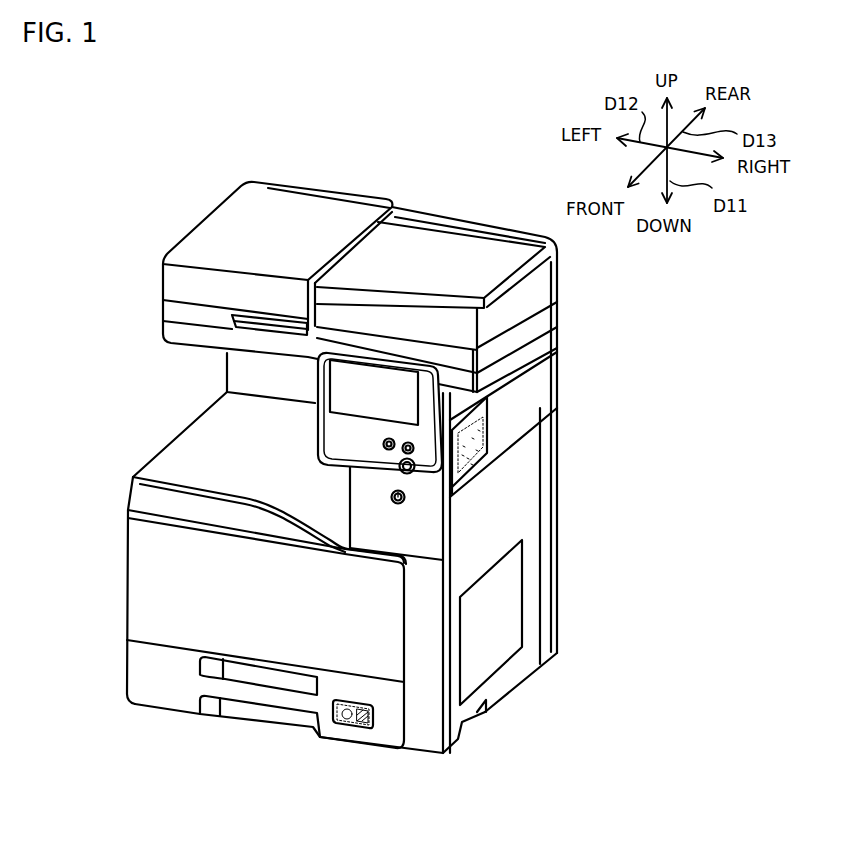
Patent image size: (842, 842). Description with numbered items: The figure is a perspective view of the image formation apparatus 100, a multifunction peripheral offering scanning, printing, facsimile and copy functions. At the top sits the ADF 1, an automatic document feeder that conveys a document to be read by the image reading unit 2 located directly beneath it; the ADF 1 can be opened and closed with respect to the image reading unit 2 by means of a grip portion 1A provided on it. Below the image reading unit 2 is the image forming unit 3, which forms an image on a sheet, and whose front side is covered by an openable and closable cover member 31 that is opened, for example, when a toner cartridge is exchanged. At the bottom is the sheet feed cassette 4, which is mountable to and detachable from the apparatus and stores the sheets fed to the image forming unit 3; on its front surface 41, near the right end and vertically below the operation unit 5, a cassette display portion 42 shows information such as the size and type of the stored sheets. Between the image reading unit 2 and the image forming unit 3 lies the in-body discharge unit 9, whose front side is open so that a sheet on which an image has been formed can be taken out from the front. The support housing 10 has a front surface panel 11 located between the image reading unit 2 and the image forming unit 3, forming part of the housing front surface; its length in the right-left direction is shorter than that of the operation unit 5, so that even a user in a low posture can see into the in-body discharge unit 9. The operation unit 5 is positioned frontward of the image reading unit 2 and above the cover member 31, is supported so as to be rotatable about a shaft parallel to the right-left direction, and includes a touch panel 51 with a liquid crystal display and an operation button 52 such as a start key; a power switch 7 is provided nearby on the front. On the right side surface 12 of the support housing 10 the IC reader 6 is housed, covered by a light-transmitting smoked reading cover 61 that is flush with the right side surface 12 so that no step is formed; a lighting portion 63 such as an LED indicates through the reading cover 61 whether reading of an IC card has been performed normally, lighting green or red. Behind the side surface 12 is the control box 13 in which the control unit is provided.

The image formation apparatus 100 is at (93, 195).
The ADF 1 is at (202, 222).
The grip portion 1A is at (267, 340).
The image reading unit 2 is at (162, 332).
The image forming unit 3 is at (125, 578).
The sheet feed cassette 4 is at (340, 742).
The operation unit 5 is at (316, 453).
The IC reader 6 is at (490, 420).
The power switch 7 is at (405, 504).
The in-body discharge unit 9 is at (299, 495).
The support housing 10 is at (560, 432).
The front surface panel 11 is at (386, 543).
The right side surface 12 is at (497, 551).
The control box 13 is at (551, 488).
The cover member 31 is at (294, 614).
The front surface 41 is at (173, 691).
The cassette display portion 42 is at (373, 722).
The touch panel 51 is at (395, 390).
The operation button 52 is at (400, 462).
The reading cover 61 is at (484, 457).
The lighting portion 63 is at (458, 492).